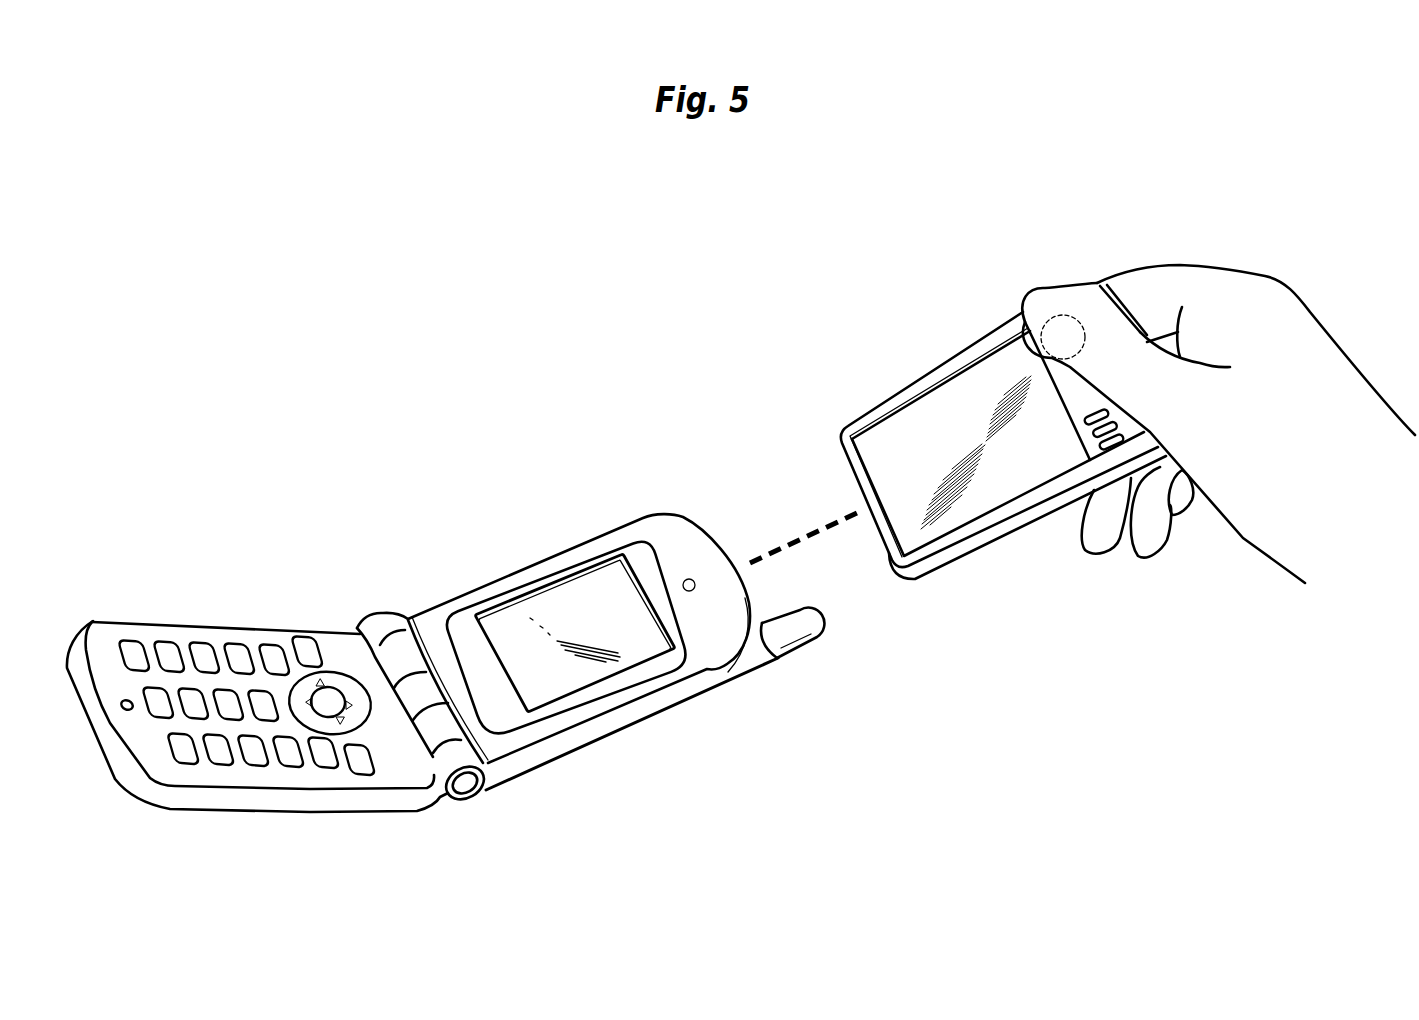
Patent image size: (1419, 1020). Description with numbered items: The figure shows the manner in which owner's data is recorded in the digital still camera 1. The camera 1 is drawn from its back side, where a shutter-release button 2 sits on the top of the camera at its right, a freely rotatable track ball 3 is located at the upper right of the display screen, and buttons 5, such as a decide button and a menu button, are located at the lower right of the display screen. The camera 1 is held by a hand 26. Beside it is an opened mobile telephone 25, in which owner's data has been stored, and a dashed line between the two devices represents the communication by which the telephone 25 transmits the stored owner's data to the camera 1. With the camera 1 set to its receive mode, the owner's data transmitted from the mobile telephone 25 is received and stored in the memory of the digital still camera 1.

The digital still camera 1 is at (1003, 440).
The shutter-release button 2 is at (980, 500).
The track ball 3 is at (1026, 347).
The buttons 5 is at (1099, 448).
The mobile telephone 25 is at (525, 533).
The hand of user 26 is at (1251, 523).